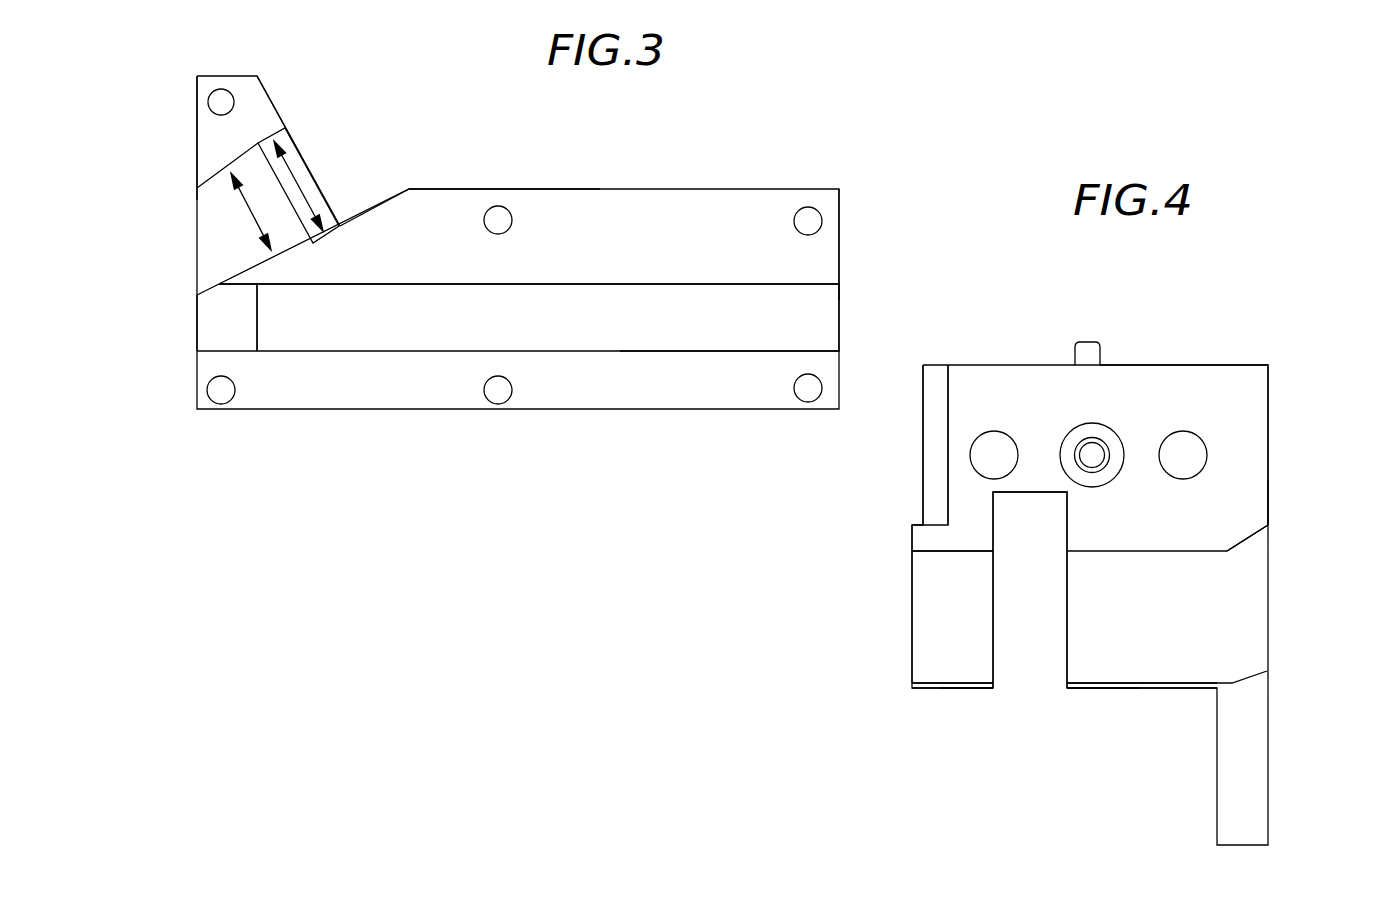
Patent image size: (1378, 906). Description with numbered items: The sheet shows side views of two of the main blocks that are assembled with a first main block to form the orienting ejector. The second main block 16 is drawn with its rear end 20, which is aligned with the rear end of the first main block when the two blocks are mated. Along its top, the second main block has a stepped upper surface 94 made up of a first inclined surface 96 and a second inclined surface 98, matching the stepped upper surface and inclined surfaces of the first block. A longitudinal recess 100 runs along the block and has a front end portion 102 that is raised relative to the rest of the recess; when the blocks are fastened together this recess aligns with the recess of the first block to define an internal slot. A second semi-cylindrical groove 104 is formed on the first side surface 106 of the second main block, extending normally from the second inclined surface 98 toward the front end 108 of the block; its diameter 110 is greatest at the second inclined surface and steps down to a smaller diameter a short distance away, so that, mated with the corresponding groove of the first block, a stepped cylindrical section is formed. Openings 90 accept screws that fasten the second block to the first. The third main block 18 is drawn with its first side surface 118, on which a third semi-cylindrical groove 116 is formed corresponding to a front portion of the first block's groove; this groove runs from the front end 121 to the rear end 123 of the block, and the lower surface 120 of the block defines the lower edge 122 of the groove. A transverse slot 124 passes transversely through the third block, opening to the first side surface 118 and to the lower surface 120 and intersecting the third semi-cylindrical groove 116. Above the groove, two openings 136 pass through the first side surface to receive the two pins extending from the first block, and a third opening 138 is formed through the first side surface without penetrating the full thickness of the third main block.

In FIG. 3, the second main block 16 is at (730, 193).
In FIG. 4, the third main block 18 is at (1278, 449).
In FIG. 3, the rear end of the second main block 20 is at (839, 224).
In FIG. 3, the openings 90 is at (223, 98).
In FIG. 3, the stepped upper surface 94 is at (440, 190).
In FIG. 3, the first inclined surface 96 is at (392, 191).
In FIG. 3, the second inclined surface 98 is at (272, 97).
In FIG. 3, the longitudinal recess 100 is at (802, 313).
In FIG. 3, the front end portion of the longitudinal recess 102 is at (228, 320).
In FIG. 3, the second semi-cylindrical groove 104 is at (217, 233).
In FIG. 3, the first side surface of the second main block 106 is at (417, 272).
In FIG. 3, the front end of the second main block 108 is at (197, 137).
In FIG. 3, the diameter of the second semi-cylindrical groove 110 is at (293, 178).
In FIG. 4, the third semi-cylindrical groove 116 is at (945, 607).
In FIG. 4, the first side surface of the third main block 118 is at (1235, 403).
In FIG. 4, the lower surface of the third main block 120 is at (948, 688).
In FIG. 4, the front end of the third main block 121 is at (912, 537).
In FIG. 4, the lower edge of the third semi-cylindrical groove 122 is at (1120, 684).
In FIG. 4, the rear end of the third main block 123 is at (1268, 504).
In FIG. 4, the transverse slot 124 is at (1027, 622).
In FIG. 4, the openings 136 is at (993, 445).
In FIG. 4, the third opening 138 is at (1093, 447).